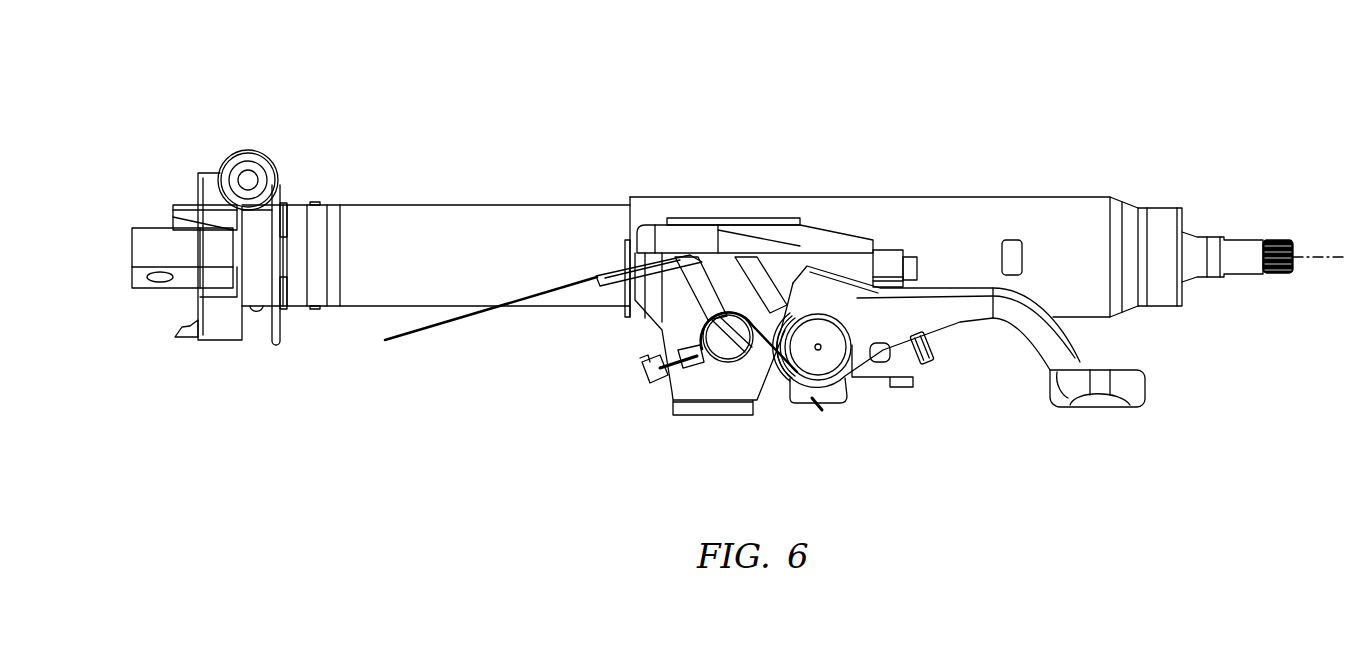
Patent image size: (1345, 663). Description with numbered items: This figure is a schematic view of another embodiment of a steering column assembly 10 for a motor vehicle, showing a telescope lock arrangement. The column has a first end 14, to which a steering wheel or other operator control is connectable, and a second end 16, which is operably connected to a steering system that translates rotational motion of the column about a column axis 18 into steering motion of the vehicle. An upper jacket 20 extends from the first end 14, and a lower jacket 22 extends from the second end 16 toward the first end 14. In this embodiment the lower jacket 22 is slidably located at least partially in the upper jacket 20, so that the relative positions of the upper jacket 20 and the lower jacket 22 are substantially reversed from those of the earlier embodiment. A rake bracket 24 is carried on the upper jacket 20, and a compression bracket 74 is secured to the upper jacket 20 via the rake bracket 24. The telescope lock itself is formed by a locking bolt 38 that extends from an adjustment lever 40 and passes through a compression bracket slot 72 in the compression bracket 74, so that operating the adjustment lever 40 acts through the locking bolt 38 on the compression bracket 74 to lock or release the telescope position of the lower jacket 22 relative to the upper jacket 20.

The steering column assembly 10 is at (420, 84).
The first end 14 is at (1273, 275).
The second end 16 is at (163, 228).
The column axis 18 is at (1327, 257).
The upper jacket 20 is at (918, 210).
The lower jacket 22 is at (383, 273).
The rake bracket 24 is at (685, 247).
The locking bolt 38 is at (817, 347).
The adjustment lever 40 is at (1048, 342).
The compression bracket slot 72 is at (877, 348).
The compression bracket 74 is at (890, 373).